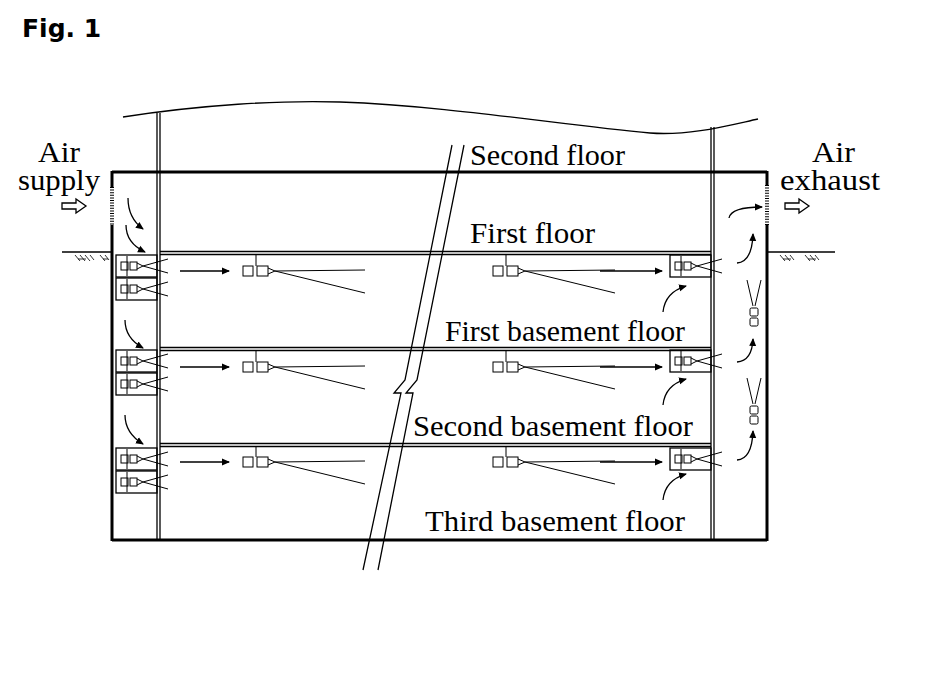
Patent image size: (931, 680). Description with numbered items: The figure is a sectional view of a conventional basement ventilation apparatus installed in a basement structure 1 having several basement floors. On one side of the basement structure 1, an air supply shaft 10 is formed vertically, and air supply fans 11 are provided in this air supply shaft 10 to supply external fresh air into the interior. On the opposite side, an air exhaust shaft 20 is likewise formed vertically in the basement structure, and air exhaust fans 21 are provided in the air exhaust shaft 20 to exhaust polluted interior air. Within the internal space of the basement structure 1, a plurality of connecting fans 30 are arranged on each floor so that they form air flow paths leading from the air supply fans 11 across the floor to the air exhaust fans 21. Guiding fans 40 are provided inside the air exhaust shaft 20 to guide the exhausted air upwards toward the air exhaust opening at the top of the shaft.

The basement structure 1 is at (504, 558).
The air supply shaft 10 is at (120, 407).
The air supply fans 11 is at (114, 476).
The air exhaust shaft 20 is at (757, 502).
The air exhaust fans 21 is at (690, 456).
The connecting fans 30 is at (273, 468).
The guiding fans 40 is at (770, 323).